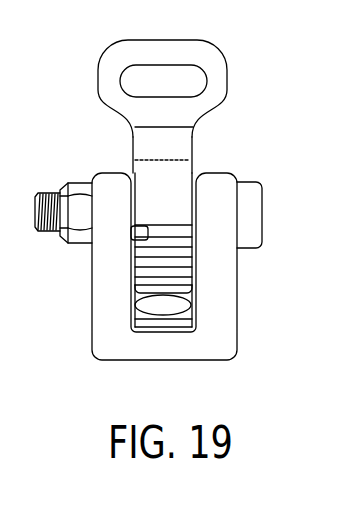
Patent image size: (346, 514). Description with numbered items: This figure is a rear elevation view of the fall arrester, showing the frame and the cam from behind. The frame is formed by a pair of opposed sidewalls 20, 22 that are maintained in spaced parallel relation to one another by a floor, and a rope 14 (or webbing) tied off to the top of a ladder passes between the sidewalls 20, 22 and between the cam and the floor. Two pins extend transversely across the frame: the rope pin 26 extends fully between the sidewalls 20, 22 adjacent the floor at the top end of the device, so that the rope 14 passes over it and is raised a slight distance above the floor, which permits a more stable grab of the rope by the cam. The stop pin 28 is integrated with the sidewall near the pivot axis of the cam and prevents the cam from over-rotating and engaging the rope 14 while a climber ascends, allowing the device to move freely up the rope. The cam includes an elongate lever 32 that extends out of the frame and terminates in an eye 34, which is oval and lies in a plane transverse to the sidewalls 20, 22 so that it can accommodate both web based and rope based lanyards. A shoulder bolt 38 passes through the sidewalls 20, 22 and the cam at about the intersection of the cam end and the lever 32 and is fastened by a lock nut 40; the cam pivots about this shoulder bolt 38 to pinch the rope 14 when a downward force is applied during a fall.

The rope 14 is at (141, 314).
The sidewall 20 is at (223, 283).
The sidewall 22 is at (110, 279).
The rope pin 26 is at (162, 328).
The stop pin 28 is at (131, 233).
The lever 32 is at (207, 115).
The eye 34 is at (158, 82).
The shoulder bolt 38 is at (247, 222).
The lock nut 40 is at (78, 192).